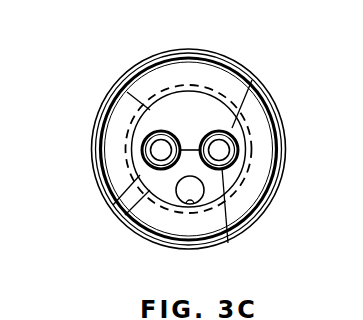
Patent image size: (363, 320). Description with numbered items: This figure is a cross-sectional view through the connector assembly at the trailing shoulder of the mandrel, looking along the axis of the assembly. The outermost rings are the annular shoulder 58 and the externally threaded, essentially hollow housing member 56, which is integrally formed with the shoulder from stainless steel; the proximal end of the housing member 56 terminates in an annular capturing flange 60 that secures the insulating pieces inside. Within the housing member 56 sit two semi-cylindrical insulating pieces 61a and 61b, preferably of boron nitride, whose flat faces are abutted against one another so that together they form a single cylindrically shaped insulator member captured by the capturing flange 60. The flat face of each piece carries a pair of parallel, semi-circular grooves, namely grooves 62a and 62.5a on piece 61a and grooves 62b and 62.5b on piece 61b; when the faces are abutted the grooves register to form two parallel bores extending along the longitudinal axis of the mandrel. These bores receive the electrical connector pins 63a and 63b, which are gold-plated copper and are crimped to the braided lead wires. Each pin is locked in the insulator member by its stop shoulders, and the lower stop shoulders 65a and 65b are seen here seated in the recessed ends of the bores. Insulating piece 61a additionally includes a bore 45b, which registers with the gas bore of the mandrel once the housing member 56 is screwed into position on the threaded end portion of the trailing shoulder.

The annular shoulder 58 is at (191, 139).
The annular capturing flange 60 is at (216, 149).
The housing member 56 is at (229, 149).
The lower stop shoulder 65a is at (102, 145).
The lower stop shoulder 65b is at (272, 150).
The bore 45b is at (196, 229).
The semi-circular groove 62.5b is at (95, 94).
The semi-circular groove 62.5a is at (95, 218).
The semi-circular groove 62b is at (284, 104).
The semi-circular groove 62a is at (247, 217).
The semi-cylindrical insulating piece 61b is at (129, 77).
The semi-cylindrical insulating piece 61a is at (137, 229).
The electrical connector pin 63a is at (68, 174).
The electrical connector pin 63b is at (291, 222).